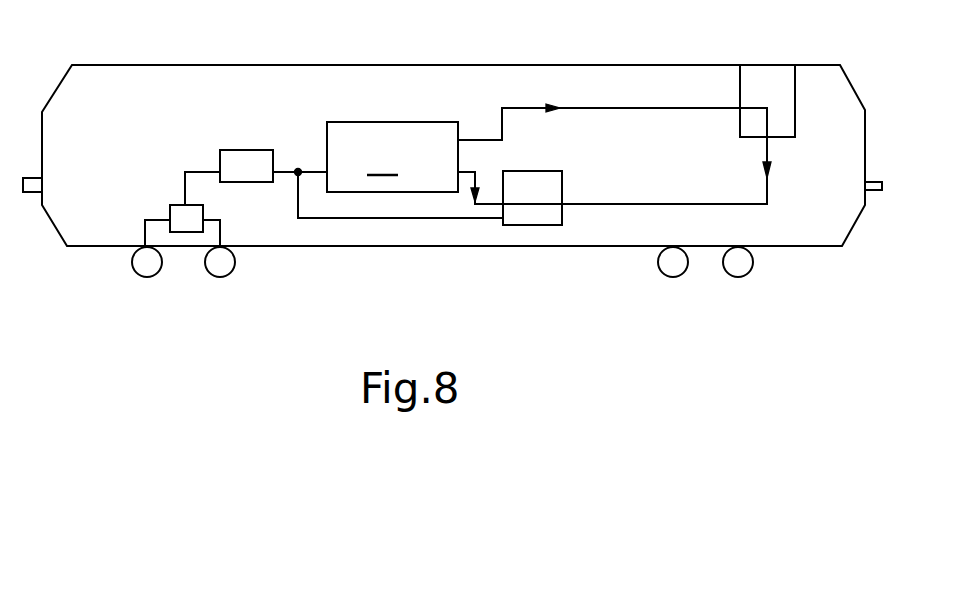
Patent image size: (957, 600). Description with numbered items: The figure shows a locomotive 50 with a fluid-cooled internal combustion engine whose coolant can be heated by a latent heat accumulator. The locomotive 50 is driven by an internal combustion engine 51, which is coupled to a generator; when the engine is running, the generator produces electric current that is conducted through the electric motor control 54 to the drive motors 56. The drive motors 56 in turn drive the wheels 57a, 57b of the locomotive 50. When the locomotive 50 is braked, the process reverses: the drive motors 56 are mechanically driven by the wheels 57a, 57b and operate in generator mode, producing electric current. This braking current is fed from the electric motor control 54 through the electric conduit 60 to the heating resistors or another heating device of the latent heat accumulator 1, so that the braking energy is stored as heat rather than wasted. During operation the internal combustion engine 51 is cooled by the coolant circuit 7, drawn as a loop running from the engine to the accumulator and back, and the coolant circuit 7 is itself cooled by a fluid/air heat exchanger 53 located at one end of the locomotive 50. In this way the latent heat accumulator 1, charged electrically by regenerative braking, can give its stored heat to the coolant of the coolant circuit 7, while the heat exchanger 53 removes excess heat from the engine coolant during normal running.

The latent heat accumulator 1 is at (562, 178).
The coolant circuit 7 is at (620, 108).
The locomotive 50 is at (380, 246).
The internal combustion engine 51 is at (392, 157).
The fluid/air heat exchanger 53 is at (798, 100).
The electric motor control 54 is at (248, 150).
The drive motors 56 is at (203, 212).
The wheel 57a is at (150, 276).
The wheel 57b is at (230, 273).
The electric conduit 60 is at (343, 218).